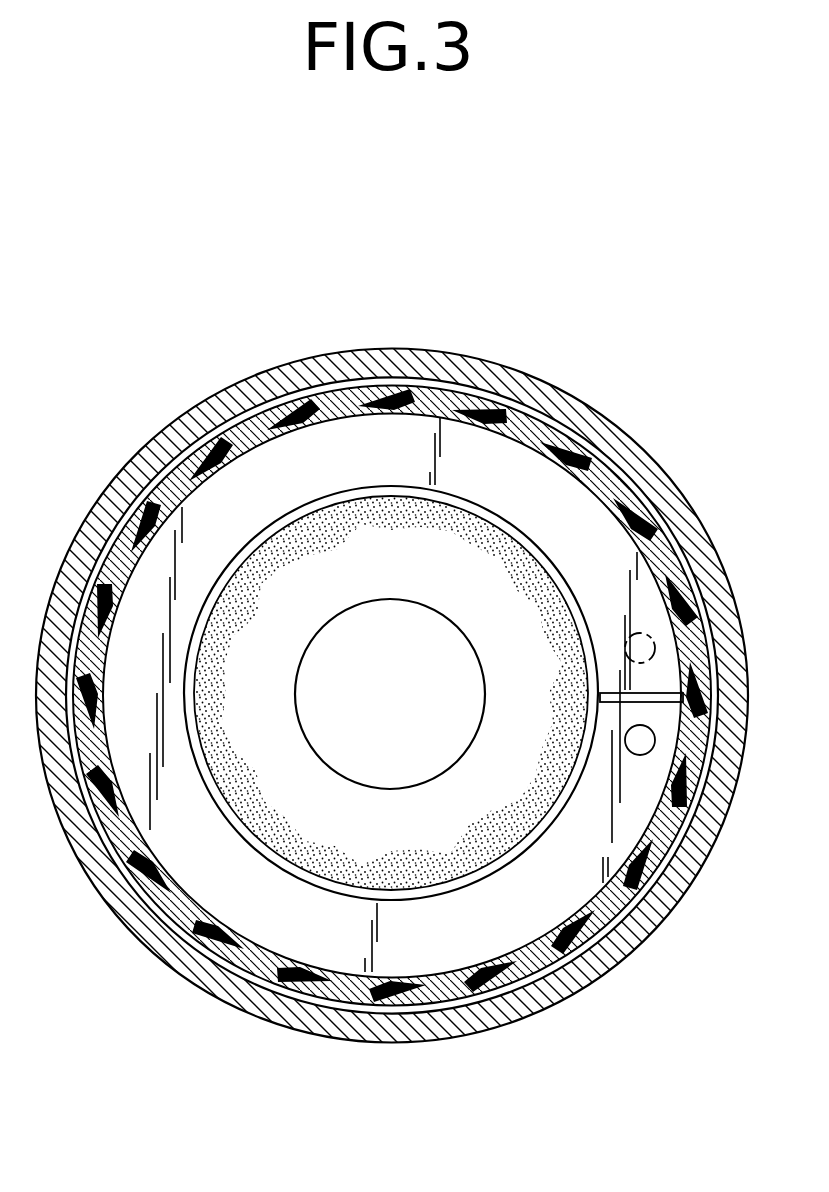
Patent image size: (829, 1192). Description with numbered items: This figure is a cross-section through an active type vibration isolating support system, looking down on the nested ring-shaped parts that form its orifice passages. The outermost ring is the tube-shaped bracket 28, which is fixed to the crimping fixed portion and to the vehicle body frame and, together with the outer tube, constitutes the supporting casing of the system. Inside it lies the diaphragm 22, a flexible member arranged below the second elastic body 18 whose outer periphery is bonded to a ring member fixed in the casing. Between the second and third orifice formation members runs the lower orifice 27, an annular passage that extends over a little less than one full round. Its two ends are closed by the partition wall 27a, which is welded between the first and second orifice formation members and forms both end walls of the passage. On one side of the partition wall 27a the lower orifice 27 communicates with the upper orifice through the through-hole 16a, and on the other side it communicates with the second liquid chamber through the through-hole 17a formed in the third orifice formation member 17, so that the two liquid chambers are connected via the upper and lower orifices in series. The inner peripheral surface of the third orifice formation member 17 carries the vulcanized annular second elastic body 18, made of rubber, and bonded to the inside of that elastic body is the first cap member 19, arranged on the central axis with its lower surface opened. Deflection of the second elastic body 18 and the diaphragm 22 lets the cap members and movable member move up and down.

The tube-shaped bracket 28 is at (578, 412).
The diaphragm 22 is at (246, 428).
The lower orifice 27 is at (360, 470).
The third orifice formation member 17 is at (392, 492).
The second elastic body 18 is at (310, 805).
The first cap member 19 is at (410, 714).
The through-hole 16a is at (622, 640).
The partition wall 27a is at (605, 704).
The through-hole 17a is at (625, 748).